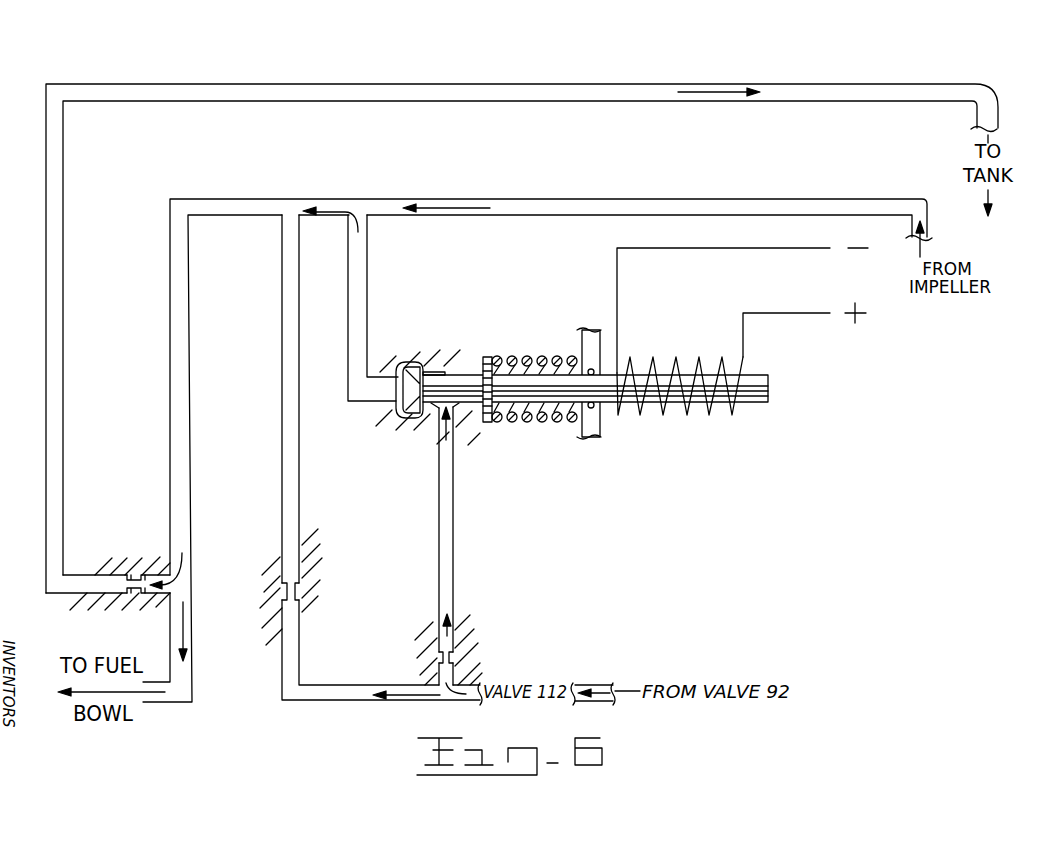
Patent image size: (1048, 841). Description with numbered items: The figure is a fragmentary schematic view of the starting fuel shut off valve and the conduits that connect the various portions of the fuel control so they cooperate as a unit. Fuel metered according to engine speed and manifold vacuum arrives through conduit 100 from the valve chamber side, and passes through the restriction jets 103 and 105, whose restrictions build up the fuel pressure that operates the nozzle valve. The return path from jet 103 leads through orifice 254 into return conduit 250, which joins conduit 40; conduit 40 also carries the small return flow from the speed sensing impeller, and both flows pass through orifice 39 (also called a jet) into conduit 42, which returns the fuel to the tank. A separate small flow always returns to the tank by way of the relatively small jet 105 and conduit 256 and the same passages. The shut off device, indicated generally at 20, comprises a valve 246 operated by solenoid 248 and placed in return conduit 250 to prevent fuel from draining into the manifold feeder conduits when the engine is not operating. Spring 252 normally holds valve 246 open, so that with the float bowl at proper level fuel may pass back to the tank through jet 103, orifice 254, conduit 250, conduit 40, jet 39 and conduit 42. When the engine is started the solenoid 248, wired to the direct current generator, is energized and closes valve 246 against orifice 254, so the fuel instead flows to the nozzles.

The conduit 42 is at (522, 93).
The conduit 40 is at (504, 207).
The return conduit 250 is at (362, 277).
The conduit 256 is at (293, 493).
The orifice 39 is at (135, 580).
The jet 105 is at (300, 589).
The jet 103 is at (453, 655).
The conduit 100 is at (593, 683).
The solenoid valve assembly 20 is at (532, 428).
The spring 252 is at (538, 356).
The solenoid 248 is at (672, 404).
The orifice 254 is at (423, 409).
The valve 246 is at (433, 383).